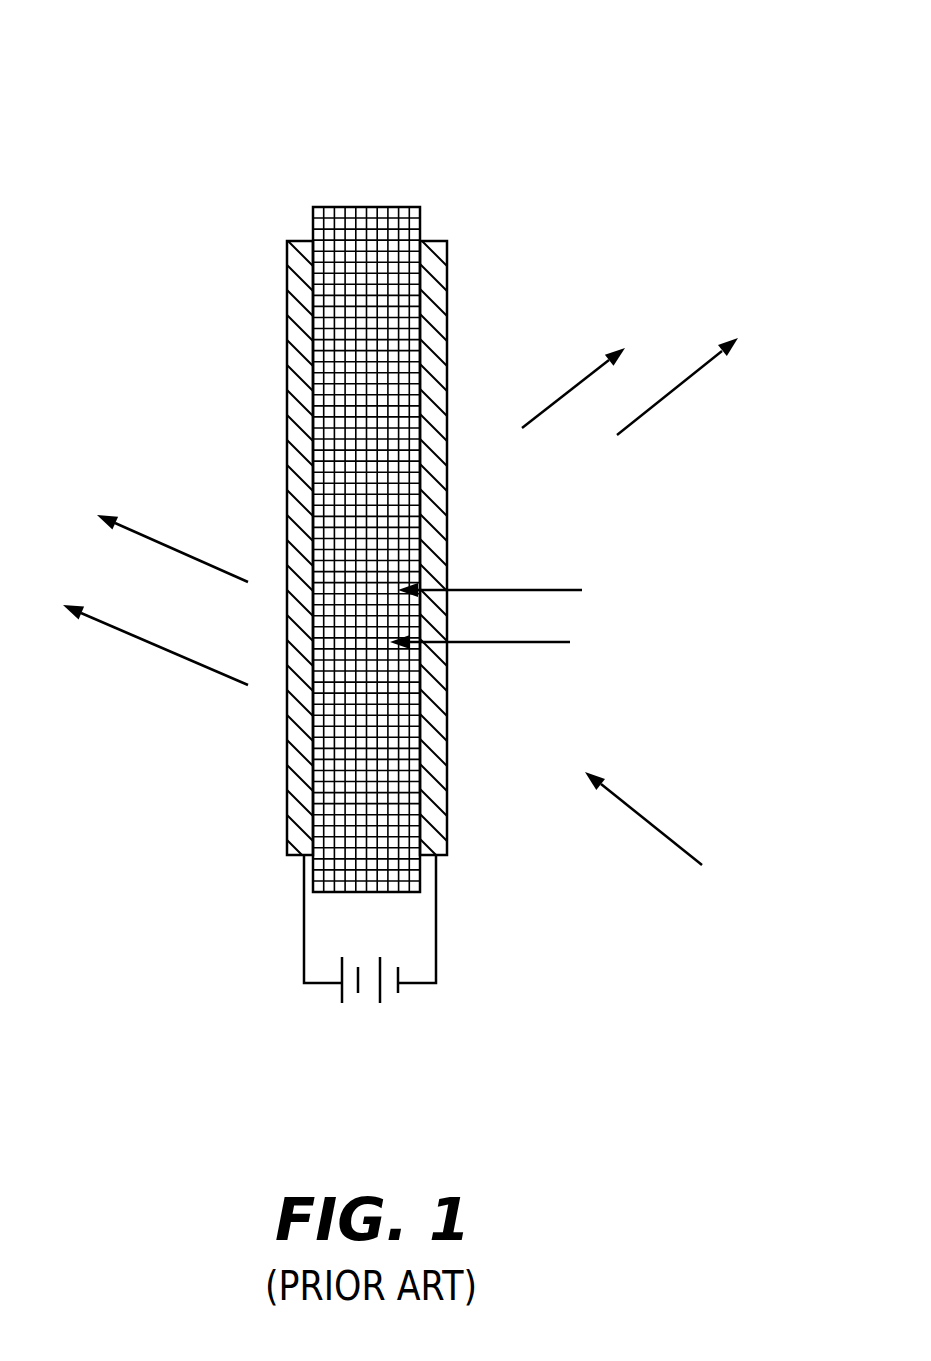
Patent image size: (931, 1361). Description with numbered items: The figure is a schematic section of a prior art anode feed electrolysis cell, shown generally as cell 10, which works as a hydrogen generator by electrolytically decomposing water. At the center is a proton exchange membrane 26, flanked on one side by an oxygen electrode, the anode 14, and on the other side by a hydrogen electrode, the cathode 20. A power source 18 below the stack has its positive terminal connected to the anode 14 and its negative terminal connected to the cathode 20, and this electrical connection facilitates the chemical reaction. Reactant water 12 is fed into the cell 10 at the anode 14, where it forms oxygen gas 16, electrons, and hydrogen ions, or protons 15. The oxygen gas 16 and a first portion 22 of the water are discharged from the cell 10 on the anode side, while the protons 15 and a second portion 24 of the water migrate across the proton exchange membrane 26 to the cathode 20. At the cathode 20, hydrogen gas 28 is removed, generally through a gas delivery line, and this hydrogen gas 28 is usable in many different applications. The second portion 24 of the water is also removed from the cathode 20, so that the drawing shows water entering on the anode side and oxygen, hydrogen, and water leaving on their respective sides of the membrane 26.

The cell 10 is at (440, 122).
The reactant water 12 is at (677, 847).
The oxygen electrode (anode) 14 is at (433, 245).
The hydrogen ions (protons) 15 is at (567, 590).
The oxygen gas 16 is at (537, 417).
The power source 18 is at (450, 1020).
The hydrogen electrode (cathode) 20 is at (306, 243).
The first portion of the water 22 is at (647, 417).
The second portion of the water 24 is at (565, 643).
The proton exchange membrane 26 is at (358, 207).
The hydrogen gas 28 is at (220, 565).